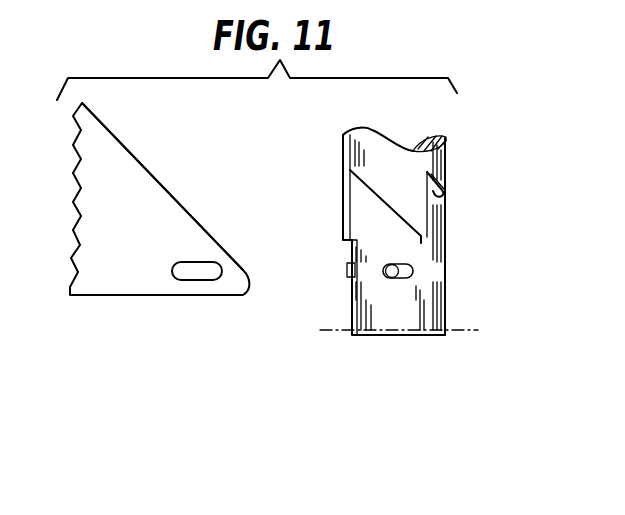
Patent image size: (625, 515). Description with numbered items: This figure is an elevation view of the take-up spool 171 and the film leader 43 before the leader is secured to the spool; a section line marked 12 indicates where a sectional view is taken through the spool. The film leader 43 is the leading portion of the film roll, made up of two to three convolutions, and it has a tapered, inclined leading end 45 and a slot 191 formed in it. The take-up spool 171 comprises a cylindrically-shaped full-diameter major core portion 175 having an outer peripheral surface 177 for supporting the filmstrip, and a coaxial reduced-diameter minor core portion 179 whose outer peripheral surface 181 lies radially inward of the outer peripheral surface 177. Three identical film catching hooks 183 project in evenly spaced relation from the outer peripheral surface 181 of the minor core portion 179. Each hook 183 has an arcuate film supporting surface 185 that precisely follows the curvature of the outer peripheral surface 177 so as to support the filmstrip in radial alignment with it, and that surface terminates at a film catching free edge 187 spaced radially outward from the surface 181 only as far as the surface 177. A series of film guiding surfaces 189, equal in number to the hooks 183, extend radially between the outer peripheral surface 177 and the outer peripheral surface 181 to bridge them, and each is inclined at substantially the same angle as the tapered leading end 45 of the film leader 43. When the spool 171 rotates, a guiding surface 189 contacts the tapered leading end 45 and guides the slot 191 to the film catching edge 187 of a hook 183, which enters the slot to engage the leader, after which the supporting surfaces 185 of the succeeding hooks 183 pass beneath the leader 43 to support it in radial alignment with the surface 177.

The film leader 43 is at (117, 254).
The tapered leading end 45 is at (146, 168).
The slot 191 is at (195, 276).
The take-up spool 171 is at (452, 255).
The major core portion 175 is at (343, 153).
The outer peripheral surface of the major core portion 177 is at (406, 185).
The minor core portion 179 is at (350, 243).
The film guiding surfaces 189 is at (377, 197).
The film catching hooks 183 is at (376, 269).
The arcuate film supporting surface 185 is at (395, 280).
The outer peripheral surface of the minor core portion 181 is at (410, 310).
The film catching free edge 187 is at (413, 268).
The section line 12- 12 is at (478, 308).